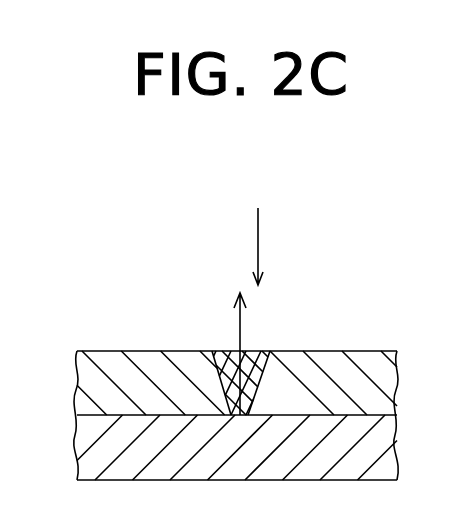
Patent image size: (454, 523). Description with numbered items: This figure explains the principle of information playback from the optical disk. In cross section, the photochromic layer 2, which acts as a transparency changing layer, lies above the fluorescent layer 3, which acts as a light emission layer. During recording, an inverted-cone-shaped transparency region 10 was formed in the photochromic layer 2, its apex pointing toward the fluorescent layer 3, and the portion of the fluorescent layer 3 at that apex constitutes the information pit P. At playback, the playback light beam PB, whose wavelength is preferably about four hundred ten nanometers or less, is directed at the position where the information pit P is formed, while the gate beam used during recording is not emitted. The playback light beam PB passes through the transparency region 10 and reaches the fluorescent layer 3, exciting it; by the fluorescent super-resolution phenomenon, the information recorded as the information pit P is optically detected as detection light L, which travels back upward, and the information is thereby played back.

The photochromic layer 2 is at (398, 378).
The fluorescent layer 3 is at (398, 440).
The transparency region 10 is at (265, 351).
The playback light beam PB is at (258, 249).
The detection light L is at (240, 320).
The information pit P is at (228, 351).